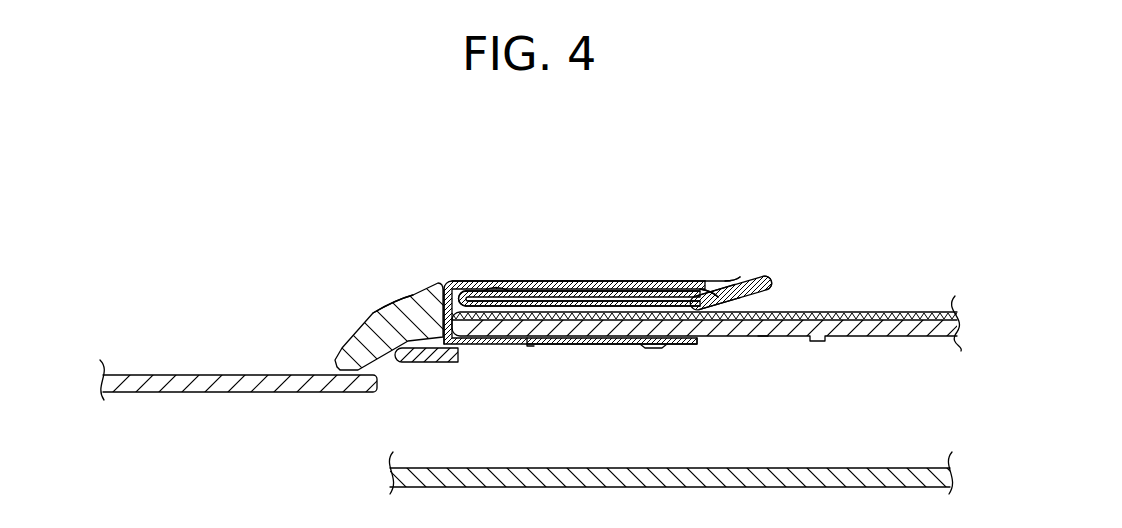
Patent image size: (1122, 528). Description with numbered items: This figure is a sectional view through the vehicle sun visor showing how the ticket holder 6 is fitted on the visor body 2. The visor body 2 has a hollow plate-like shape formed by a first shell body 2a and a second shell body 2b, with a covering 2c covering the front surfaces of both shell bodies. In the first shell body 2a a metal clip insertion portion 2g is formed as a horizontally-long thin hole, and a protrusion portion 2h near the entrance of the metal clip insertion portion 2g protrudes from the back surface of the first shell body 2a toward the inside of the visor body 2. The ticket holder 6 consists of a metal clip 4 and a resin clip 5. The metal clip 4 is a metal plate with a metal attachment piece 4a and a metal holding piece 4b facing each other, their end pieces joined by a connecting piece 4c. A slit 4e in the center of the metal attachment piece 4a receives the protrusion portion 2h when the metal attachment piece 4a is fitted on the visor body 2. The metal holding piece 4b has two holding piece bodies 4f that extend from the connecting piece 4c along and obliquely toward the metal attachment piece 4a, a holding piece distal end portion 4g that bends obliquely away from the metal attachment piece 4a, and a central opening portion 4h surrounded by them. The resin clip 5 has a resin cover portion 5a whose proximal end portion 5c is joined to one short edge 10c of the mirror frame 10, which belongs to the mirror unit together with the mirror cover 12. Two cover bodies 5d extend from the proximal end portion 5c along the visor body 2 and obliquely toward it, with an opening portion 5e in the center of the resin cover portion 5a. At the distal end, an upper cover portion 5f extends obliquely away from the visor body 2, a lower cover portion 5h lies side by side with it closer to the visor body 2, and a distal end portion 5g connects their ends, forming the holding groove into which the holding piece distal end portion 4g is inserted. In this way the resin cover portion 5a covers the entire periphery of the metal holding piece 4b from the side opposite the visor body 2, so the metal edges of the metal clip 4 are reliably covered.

The visor body 2 is at (740, 315).
The first shell body 2a is at (875, 340).
The second shell body 2b is at (683, 472).
The covering 2c is at (845, 310).
The metal clip insertion portion 2g is at (463, 350).
The protrusion portion 2h is at (528, 346).
The metal clip 4 is at (482, 347).
The metal attachment piece 4a is at (677, 345).
The metal holding piece 4b is at (687, 192).
The connecting piece 4c is at (443, 287).
The slit 4e is at (663, 345).
The holding piece bodies 4f is at (603, 281).
The holding piece distal end portion 4g is at (735, 292).
The opening portion 4h is at (516, 286).
The resin clip 5 is at (588, 274).
The resin cover portion 5a is at (557, 282).
The proximal end portion 5c is at (480, 284).
The cover bodies 5d is at (640, 288).
The opening portion 5e is at (507, 284).
The upper cover portion 5f is at (744, 286).
The distal end portion 5g is at (772, 283).
The lower cover portion 5h is at (763, 340).
The ticket holder 6 is at (569, 253).
The mirror frame 10 is at (350, 321).
The short edges 10c is at (411, 310).
The mirror cover 12 is at (177, 370).